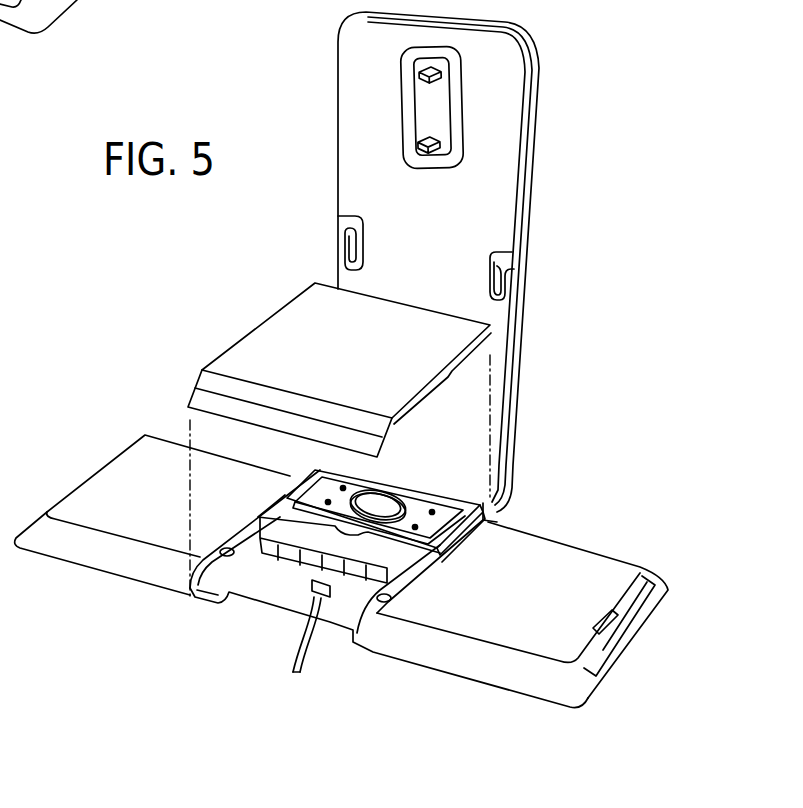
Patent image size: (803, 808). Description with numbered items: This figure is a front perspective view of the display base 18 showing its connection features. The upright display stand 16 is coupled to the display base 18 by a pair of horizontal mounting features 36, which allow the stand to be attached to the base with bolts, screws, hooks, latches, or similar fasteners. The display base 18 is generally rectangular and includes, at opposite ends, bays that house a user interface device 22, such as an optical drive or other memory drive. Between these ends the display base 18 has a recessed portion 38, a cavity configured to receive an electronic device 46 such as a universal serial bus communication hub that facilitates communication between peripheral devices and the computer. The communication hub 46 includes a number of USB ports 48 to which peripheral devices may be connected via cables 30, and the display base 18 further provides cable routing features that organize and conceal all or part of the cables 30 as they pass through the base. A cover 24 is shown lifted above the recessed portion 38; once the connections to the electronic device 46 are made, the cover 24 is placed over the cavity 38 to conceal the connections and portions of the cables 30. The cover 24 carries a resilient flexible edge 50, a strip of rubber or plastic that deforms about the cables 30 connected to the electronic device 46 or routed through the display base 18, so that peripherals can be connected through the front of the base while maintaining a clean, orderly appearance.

The display stand 16 is at (504, 102).
The display base 18 is at (85, 508).
The user interface device 22 is at (594, 647).
The cover 24 is at (283, 333).
The cables 30 is at (312, 650).
The horizontal mounting features 36 is at (439, 512).
The recessed portion 38 is at (240, 583).
The electronic device 46 is at (390, 560).
The USB ports 48 is at (307, 568).
The resilient flexible edge 50 is at (218, 417).